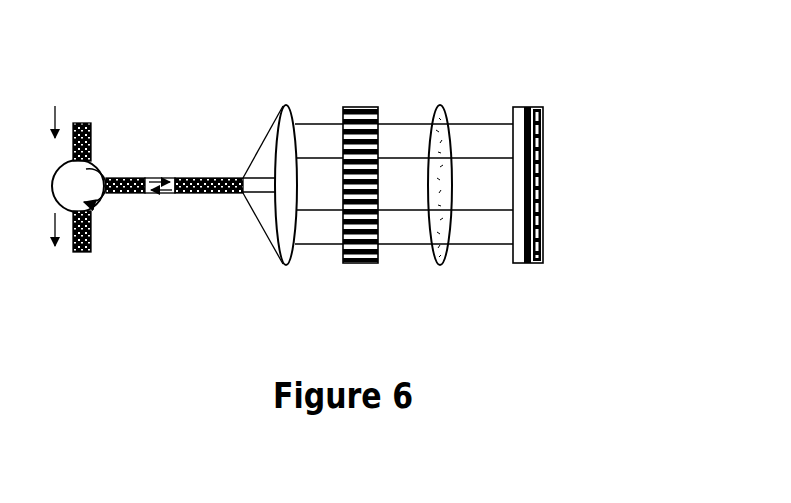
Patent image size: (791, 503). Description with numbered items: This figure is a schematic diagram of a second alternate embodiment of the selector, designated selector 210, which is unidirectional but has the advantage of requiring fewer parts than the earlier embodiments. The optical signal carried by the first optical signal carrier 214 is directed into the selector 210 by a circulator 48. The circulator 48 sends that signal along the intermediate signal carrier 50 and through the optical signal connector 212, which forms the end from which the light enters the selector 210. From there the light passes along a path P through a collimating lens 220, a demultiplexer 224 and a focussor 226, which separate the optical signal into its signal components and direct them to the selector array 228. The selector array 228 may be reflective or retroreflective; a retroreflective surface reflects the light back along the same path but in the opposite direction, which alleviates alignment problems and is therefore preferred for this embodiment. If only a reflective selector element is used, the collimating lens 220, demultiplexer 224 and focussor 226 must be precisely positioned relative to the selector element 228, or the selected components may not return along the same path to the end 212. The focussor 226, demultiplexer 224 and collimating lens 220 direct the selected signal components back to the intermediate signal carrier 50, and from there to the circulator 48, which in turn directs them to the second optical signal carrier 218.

The selector 210 is at (576, 65).
The first optical signal carrier 214 is at (90, 127).
The second optical signal carrier 218 is at (91, 252).
The circulator 48 is at (98, 167).
The intermediate signal carrier 50 is at (212, 178).
The optical signal connector 212 is at (246, 194).
The collimating lens 220 is at (285, 106).
The demultiplexer 224 is at (367, 107).
The focussor 226 is at (440, 106).
The selector array 228 is at (544, 226).
The light beam path P is at (318, 245).